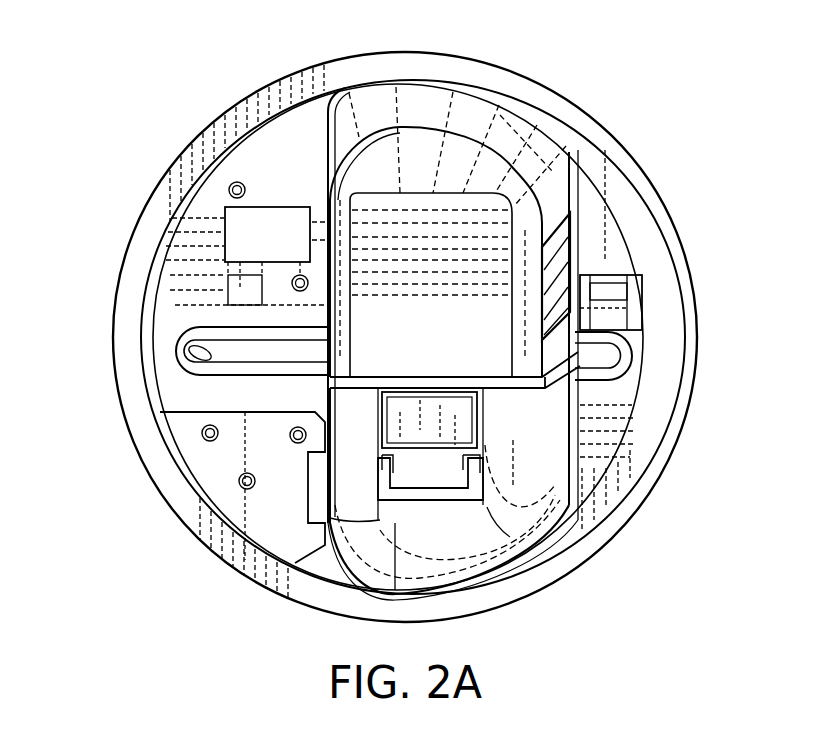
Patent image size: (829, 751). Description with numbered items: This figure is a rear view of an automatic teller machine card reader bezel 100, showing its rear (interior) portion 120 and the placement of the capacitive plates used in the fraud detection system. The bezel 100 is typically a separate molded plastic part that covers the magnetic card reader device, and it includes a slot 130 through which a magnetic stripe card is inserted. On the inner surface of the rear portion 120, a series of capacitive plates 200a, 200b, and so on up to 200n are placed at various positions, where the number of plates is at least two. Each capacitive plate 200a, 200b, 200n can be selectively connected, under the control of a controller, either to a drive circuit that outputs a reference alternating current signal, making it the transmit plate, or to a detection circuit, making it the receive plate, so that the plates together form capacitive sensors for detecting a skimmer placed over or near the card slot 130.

The bezel 100 is at (652, 180).
The rear (interior) portion 120 is at (352, 118).
The slot 130 is at (180, 342).
The capacitive plate 200n is at (226, 241).
The capacitive plate 200a is at (580, 263).
The capacitive plate 200b is at (480, 432).